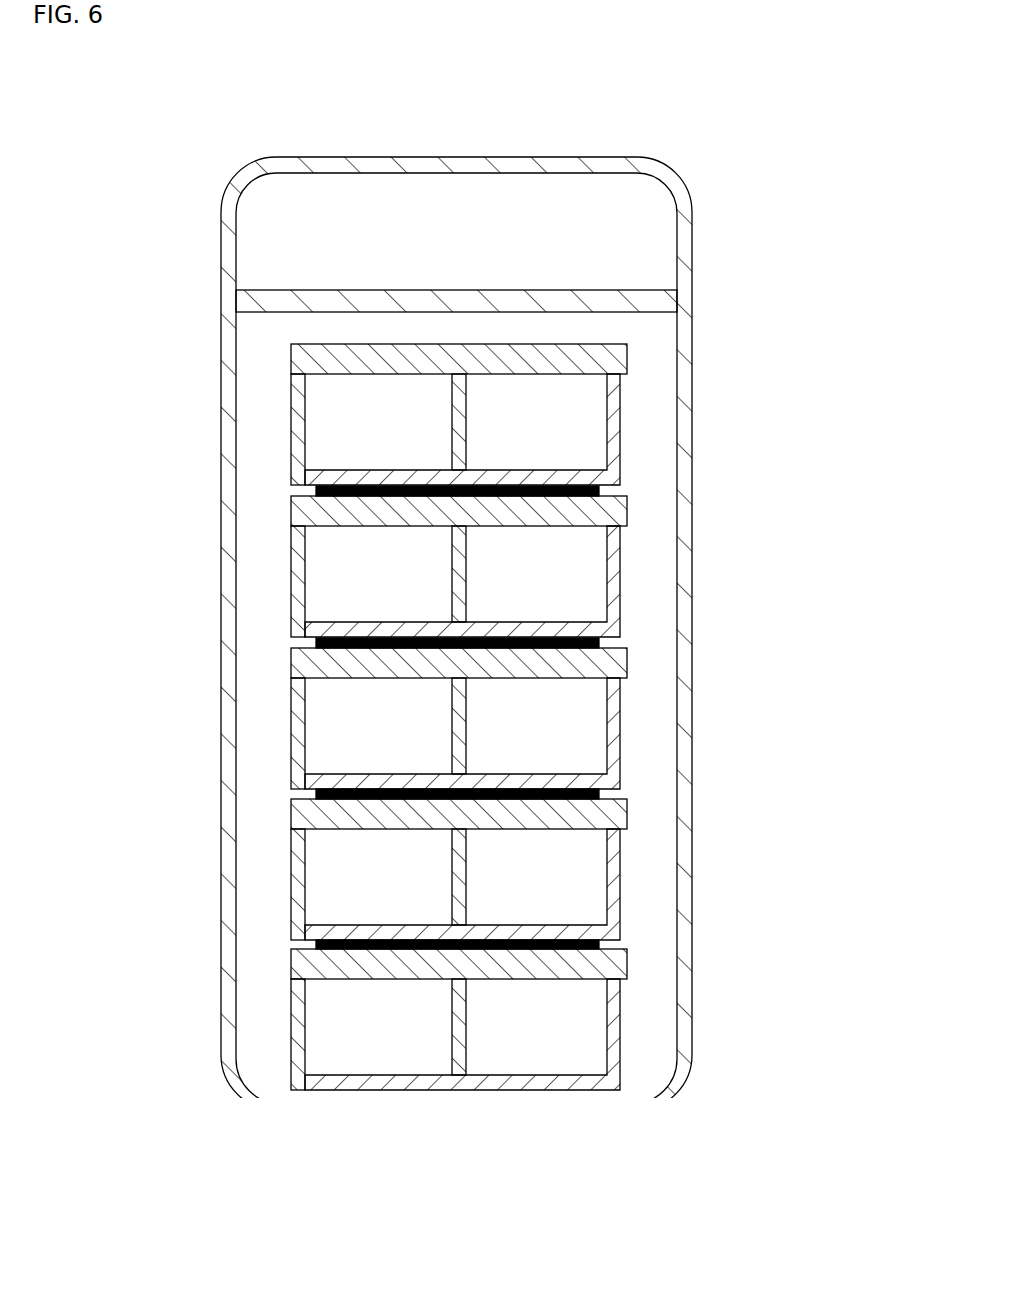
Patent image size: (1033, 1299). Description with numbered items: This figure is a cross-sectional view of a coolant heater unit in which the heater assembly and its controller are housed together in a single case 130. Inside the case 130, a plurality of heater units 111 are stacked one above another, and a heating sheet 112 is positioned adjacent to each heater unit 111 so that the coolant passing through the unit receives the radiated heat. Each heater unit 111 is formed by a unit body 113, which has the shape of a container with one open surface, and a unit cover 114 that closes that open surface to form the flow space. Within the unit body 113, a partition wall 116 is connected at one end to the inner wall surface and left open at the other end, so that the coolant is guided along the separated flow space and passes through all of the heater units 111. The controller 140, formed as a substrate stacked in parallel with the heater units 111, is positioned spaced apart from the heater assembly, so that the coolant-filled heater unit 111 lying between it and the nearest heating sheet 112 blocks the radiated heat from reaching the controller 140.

The case 130 is at (688, 244).
The controller 140 is at (652, 302).
The heater unit 111 is at (527, 717).
The unit cover 114 is at (600, 364).
The unit body 113 is at (600, 451).
The partition wall 116 is at (460, 427).
The heating sheet 112 is at (390, 788).